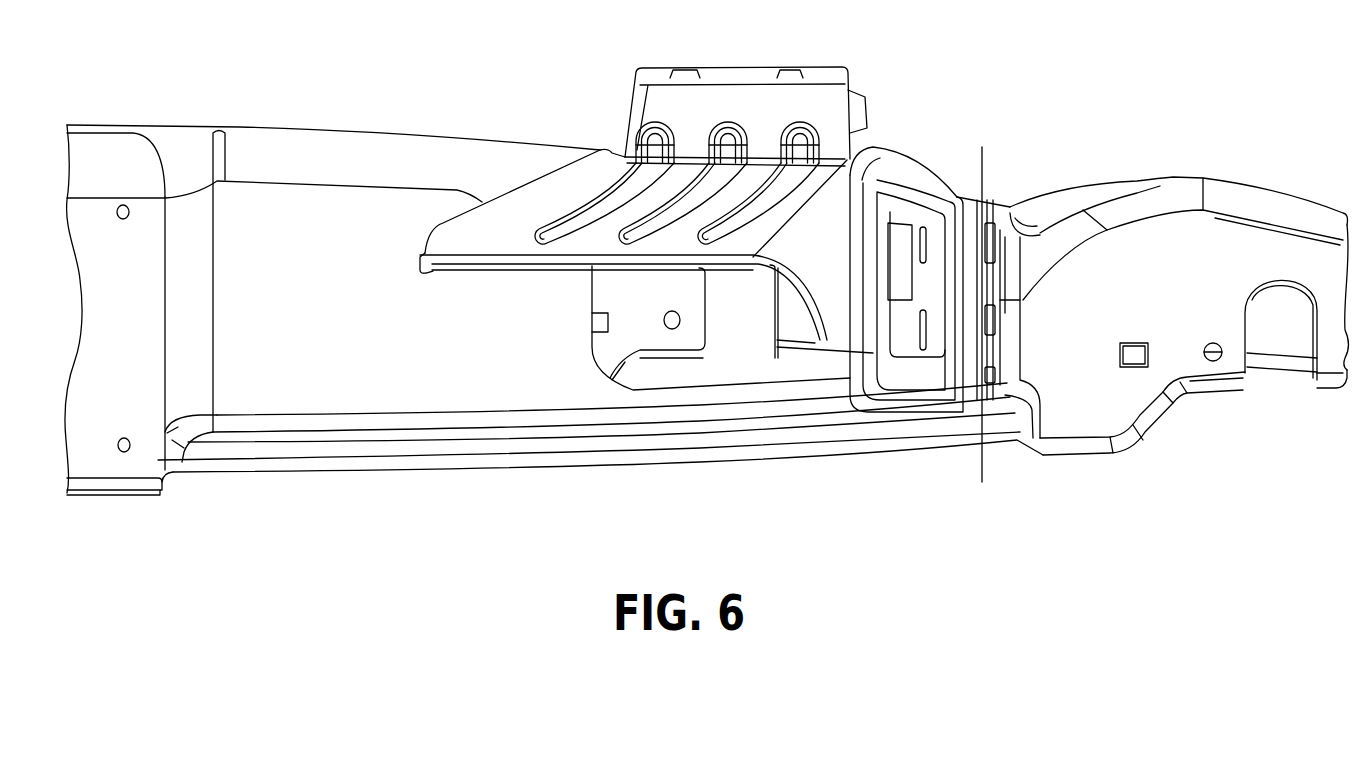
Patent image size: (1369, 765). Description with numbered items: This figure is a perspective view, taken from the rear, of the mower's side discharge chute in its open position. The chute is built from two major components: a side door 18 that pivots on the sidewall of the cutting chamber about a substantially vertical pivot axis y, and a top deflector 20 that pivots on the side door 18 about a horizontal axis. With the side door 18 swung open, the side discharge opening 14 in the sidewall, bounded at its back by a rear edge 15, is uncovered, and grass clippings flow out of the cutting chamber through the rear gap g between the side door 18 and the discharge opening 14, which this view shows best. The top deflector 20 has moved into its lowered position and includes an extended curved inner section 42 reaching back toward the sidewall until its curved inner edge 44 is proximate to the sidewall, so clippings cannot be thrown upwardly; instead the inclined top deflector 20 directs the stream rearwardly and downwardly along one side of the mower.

The side discharge opening 14 is at (727, 390).
The rear edge of discharge opening 15 is at (590, 289).
The side door 18 is at (902, 170).
The top deflector 20 is at (743, 190).
The extended curved inner section 42 is at (493, 230).
The curved inner edge 44 is at (482, 200).
The rear gap g is at (580, 331).
The vertical pivot axis y is at (982, 463).